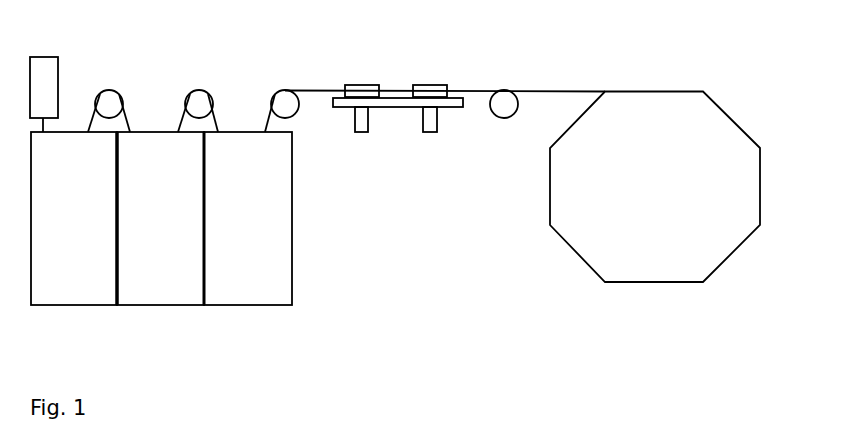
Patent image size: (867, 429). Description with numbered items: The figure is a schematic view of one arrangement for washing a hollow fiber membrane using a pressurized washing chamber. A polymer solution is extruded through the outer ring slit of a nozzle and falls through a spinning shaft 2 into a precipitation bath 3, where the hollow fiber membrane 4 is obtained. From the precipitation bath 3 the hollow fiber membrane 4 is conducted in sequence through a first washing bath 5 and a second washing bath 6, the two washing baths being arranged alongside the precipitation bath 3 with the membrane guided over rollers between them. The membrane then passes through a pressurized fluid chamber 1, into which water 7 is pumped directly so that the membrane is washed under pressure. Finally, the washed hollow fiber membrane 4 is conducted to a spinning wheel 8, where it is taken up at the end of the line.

The pressurized fluid chamber 1 is at (393, 117).
The spinning shaft 2 is at (44, 94).
The precipitation bath 3 is at (74, 218).
The hollow fiber membrane 4 is at (445, 72).
The first washing bath 5 is at (160, 218).
The second washing bath 6 is at (248, 218).
The water 7 is at (430, 78).
The spinning wheel 8 is at (655, 187).